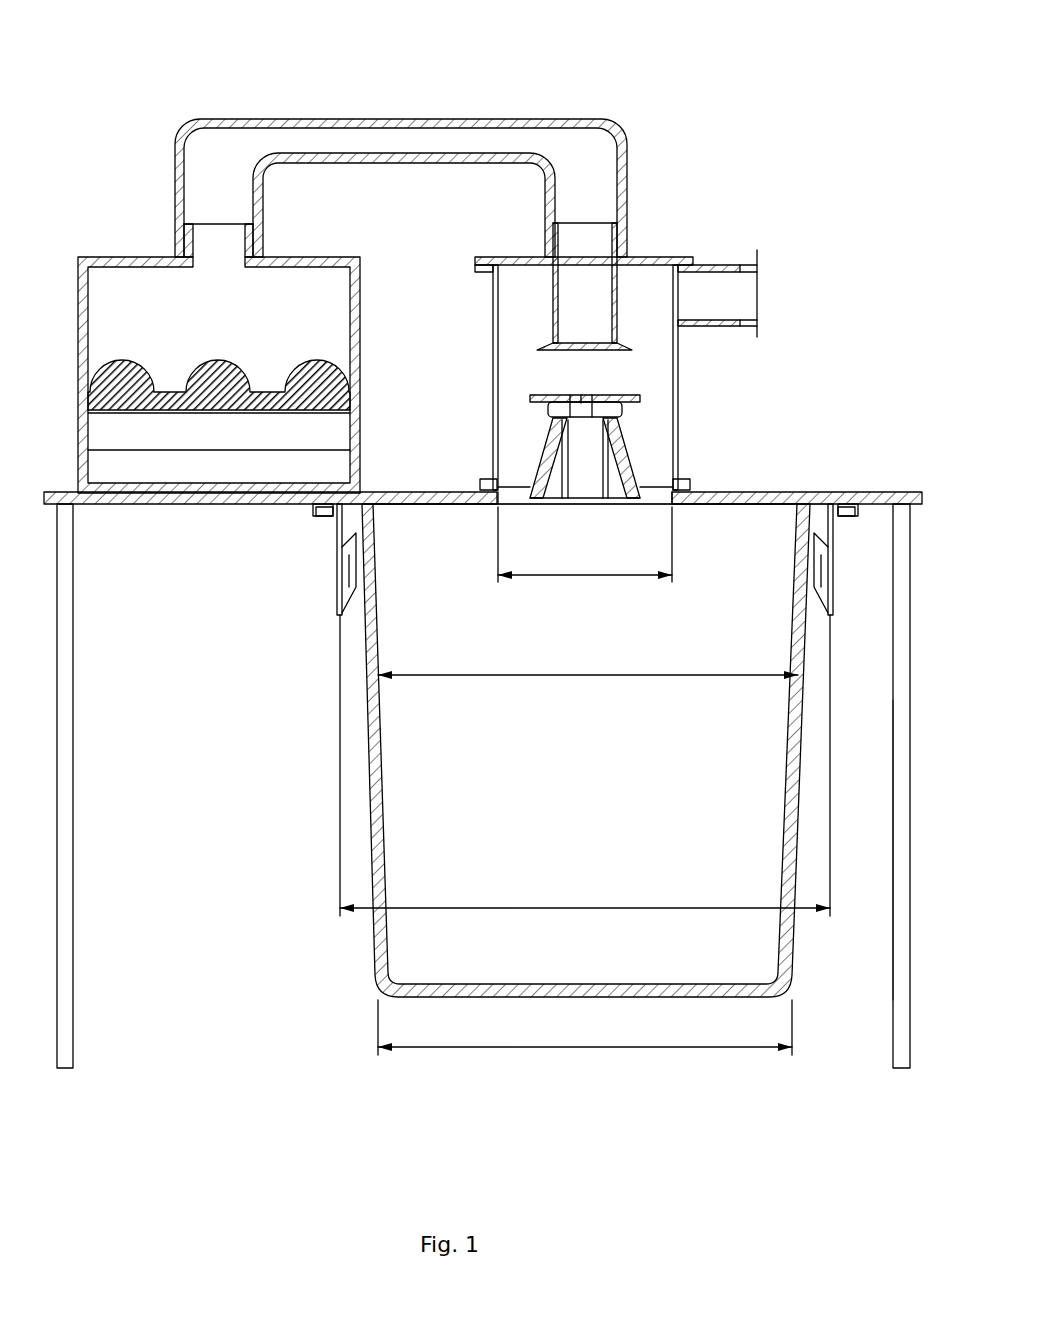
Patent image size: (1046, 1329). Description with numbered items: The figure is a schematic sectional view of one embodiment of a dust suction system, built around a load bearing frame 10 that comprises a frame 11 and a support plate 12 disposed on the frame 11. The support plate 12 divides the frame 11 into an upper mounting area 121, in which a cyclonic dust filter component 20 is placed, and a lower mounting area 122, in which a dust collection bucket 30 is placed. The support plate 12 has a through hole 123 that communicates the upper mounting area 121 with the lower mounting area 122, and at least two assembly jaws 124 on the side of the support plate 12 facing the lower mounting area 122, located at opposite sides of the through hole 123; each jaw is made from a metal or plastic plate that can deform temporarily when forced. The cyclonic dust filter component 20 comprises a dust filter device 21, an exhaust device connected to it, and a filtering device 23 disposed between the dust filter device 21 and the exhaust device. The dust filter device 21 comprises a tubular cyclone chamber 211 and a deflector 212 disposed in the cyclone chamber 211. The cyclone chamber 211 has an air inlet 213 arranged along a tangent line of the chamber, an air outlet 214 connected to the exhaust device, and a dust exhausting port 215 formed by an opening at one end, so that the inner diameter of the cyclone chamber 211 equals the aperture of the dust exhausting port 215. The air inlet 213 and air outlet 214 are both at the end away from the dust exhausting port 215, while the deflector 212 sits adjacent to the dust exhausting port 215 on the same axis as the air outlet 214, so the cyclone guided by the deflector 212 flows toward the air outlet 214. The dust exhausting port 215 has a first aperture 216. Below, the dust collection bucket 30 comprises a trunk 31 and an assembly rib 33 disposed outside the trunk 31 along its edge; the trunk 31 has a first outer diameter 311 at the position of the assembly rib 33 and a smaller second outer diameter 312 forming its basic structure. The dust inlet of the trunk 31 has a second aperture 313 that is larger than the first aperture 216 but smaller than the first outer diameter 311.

The load bearing frame 10 is at (502, 725).
The frame 11 is at (62, 970).
The support plate 12 is at (190, 505).
The upper mounting area 121 is at (818, 462).
The lower mounting area 122 is at (846, 660).
The through hole 123 is at (492, 505).
The assembly jaws 124 is at (333, 512).
The cyclonic dust filter component 20 is at (457, 308).
The dust filter device 21 is at (656, 369).
The cyclone chamber 211 is at (678, 405).
The deflector 212 is at (633, 460).
The air inlet 213 is at (683, 298).
The air outlet 214 is at (594, 343).
The dust exhausting port 215 is at (658, 508).
The first aperture 216 is at (585, 544).
The filtering device 23 is at (138, 257).
The dust collection bucket 30 is at (543, 780).
The trunk 31 is at (375, 770).
The first outer diameter 311 is at (585, 765).
The second outer diameter 312 is at (585, 1027).
The second aperture 313 is at (588, 663).
The assembly rib 33 is at (353, 570).